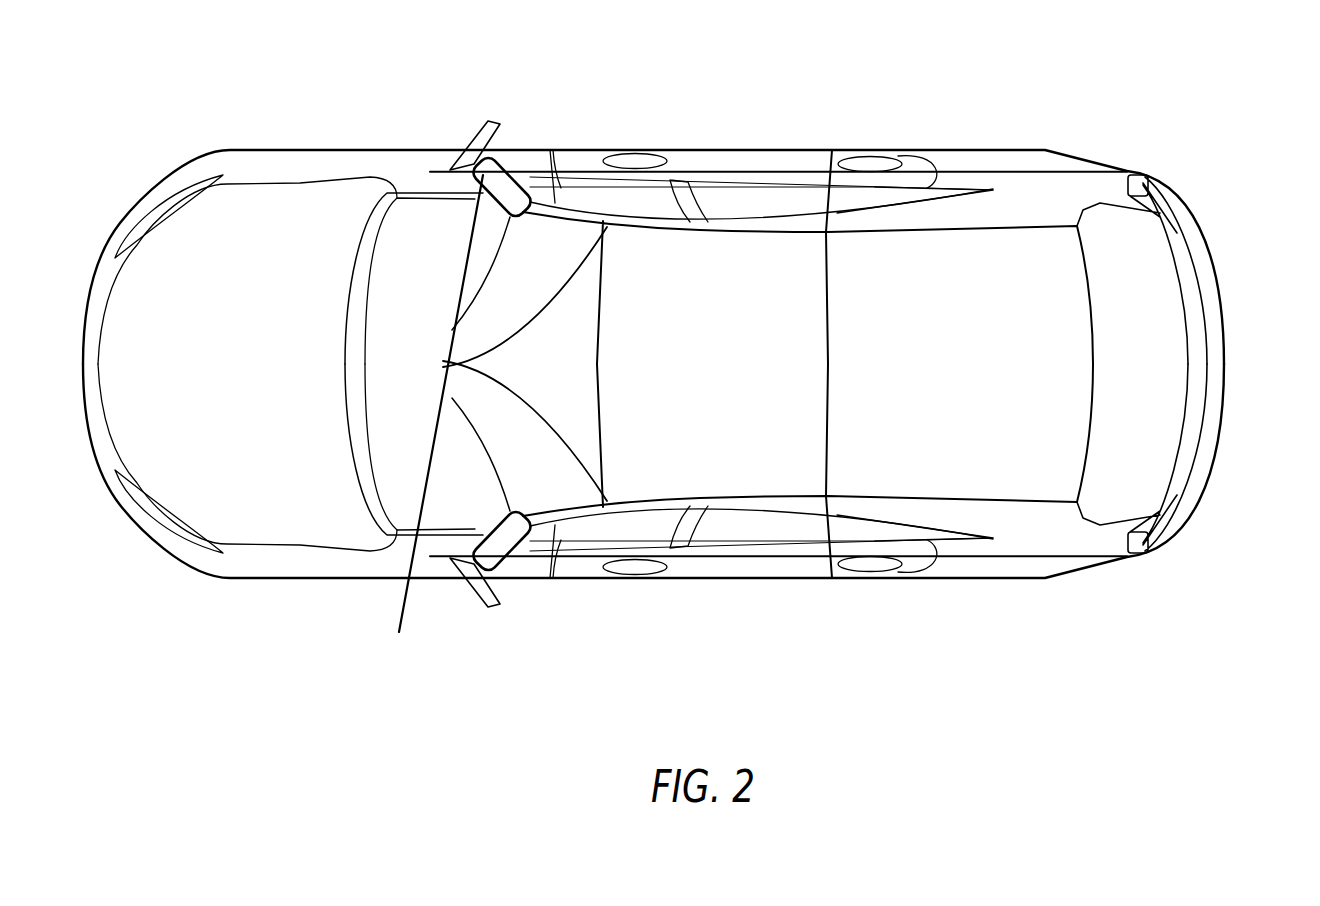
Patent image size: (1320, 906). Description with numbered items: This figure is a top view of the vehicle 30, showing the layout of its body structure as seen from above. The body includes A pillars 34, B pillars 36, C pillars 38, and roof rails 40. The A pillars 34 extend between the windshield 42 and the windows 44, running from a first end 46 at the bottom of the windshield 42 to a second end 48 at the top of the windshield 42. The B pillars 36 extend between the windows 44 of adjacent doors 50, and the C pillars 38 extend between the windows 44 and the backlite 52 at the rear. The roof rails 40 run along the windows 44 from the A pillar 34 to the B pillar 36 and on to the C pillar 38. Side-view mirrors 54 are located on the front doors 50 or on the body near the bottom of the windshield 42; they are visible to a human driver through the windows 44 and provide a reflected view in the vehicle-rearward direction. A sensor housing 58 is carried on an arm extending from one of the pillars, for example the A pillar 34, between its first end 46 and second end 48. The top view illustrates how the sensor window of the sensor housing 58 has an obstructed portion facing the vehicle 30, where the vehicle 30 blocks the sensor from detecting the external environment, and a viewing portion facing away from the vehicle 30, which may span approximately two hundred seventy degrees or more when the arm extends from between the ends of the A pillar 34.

The vehicle 30 is at (1072, 74).
The A pillars 34 is at (519, 363).
The B pillars 36 is at (761, 365).
The C pillars 38 is at (778, 364).
The roof rails 40 is at (912, 363).
The windshield 42 is at (377, 495).
The windows 44 is at (700, 364).
The first end 46 is at (420, 364).
The second end 48 is at (443, 366).
The doors 50 is at (654, 363).
The backlite 52 is at (1093, 317).
The side-view mirrors 54 is at (464, 363).
The sensor housing 58 is at (461, 364).